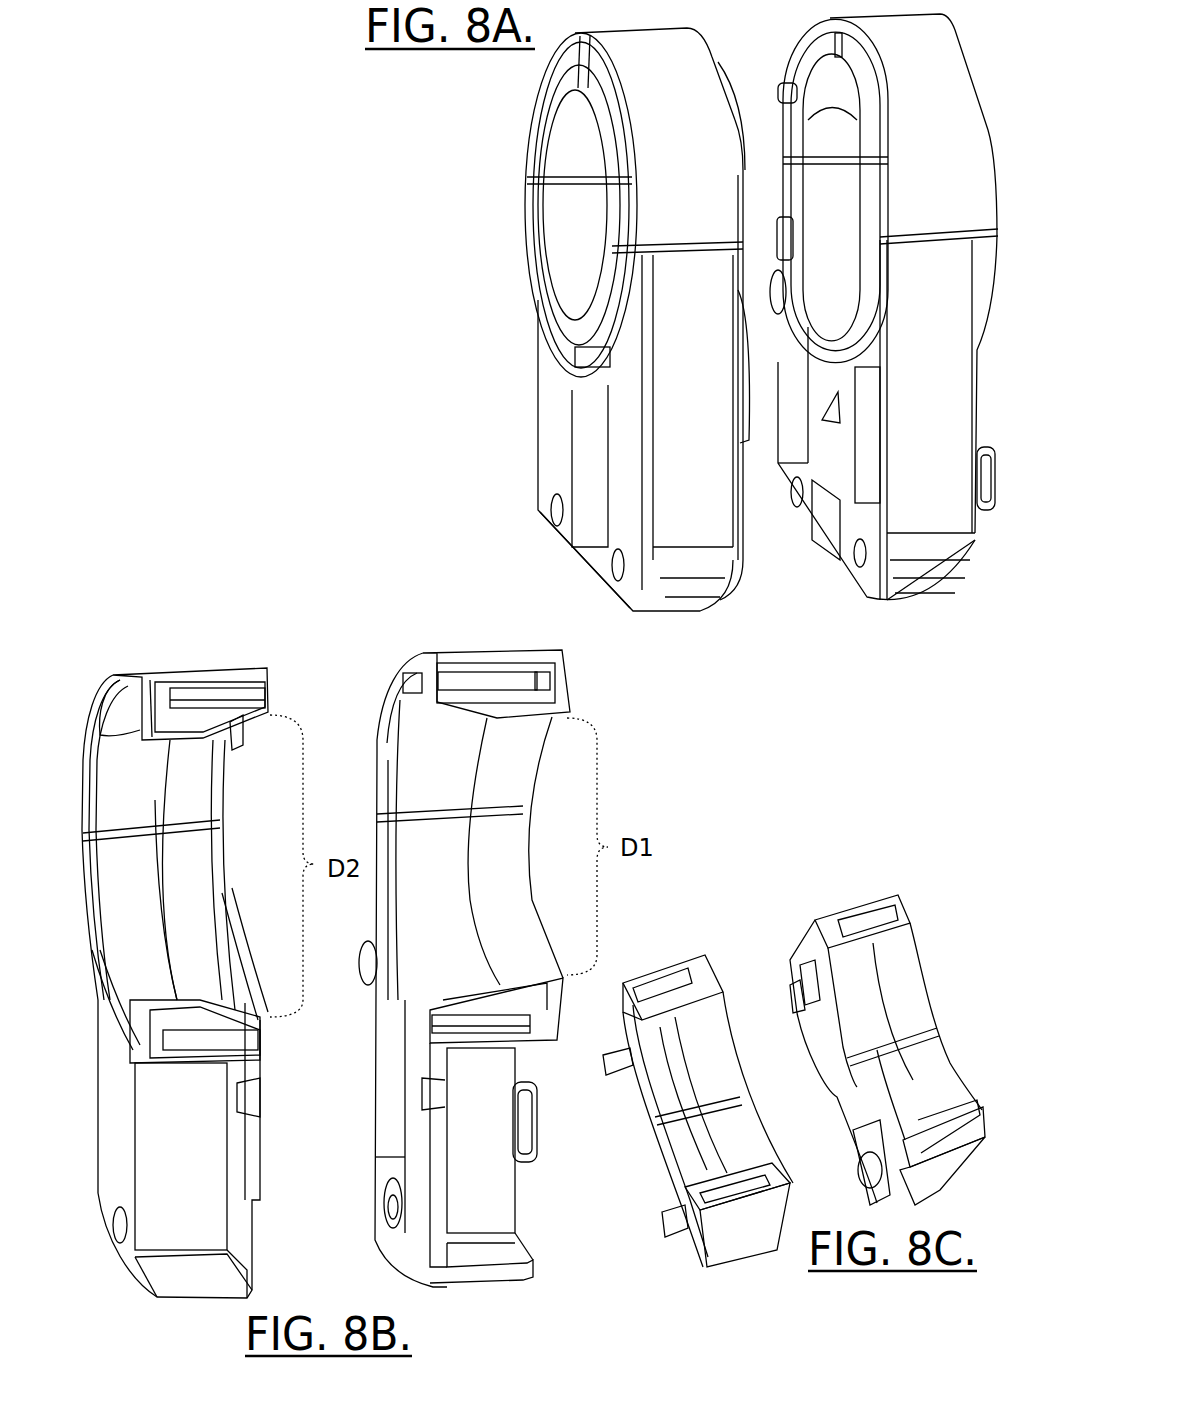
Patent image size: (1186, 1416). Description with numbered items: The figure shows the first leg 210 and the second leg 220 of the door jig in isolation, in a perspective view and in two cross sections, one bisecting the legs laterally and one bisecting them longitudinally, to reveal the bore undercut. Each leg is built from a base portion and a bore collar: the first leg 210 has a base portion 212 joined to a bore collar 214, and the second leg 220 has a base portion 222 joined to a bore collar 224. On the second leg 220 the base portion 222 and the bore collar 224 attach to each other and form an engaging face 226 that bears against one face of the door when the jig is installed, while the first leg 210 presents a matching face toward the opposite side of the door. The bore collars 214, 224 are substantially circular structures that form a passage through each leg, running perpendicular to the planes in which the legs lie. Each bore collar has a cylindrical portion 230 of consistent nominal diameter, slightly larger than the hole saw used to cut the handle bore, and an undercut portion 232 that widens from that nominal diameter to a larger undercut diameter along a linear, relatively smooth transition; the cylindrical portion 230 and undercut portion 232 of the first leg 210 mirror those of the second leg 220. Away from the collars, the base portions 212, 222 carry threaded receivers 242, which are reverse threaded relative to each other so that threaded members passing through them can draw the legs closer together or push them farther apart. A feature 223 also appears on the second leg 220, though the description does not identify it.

In FIG. 8A, the first leg 210 is at (525, 438).
In FIG. 8B, the first leg 210 is at (200, 640).
In FIG. 8C, the first leg 210 is at (685, 953).
In FIG. 8A, the base portion 212 is at (690, 450).
In FIG. 8B, the base portion 212 is at (168, 1138).
In FIG. 8A, the bore collar 214 is at (547, 302).
In FIG. 8B, the bore collar 214 is at (250, 677).
In FIG. 8A, the second leg 220 is at (820, 582).
In FIG. 8B, the second leg 220 is at (482, 642).
In FIG. 8C, the second leg 220 is at (866, 897).
In FIG. 8A, the base portion 222 is at (933, 503).
In FIG. 8B, the base portion 222 is at (460, 1150).
In FIG. 8A, the recess 223 is at (827, 445).
In FIG. 8A, the bore collar 224 is at (837, 37).
In FIG. 8B, the bore collar 224 is at (435, 687).
In FIG. 8B, the engaging face 226 is at (417, 1072).
In FIG. 8A, the cylindrical portion 230 is at (555, 153).
In FIG. 8B, the cylindrical portion 230 is at (120, 878).
In FIG. 8C, the cylindrical portion 230 is at (688, 1153).
In FIG. 8A, the undercut portion 232 is at (830, 122).
In FIG. 8B, the undercut portion 232 is at (195, 957).
In FIG. 8C, the undercut portion 232 is at (700, 1033).
In FIG. 8A, the threaded receivers 242 is at (548, 520).
In FIG. 8B, the threaded receivers 242 is at (390, 1218).